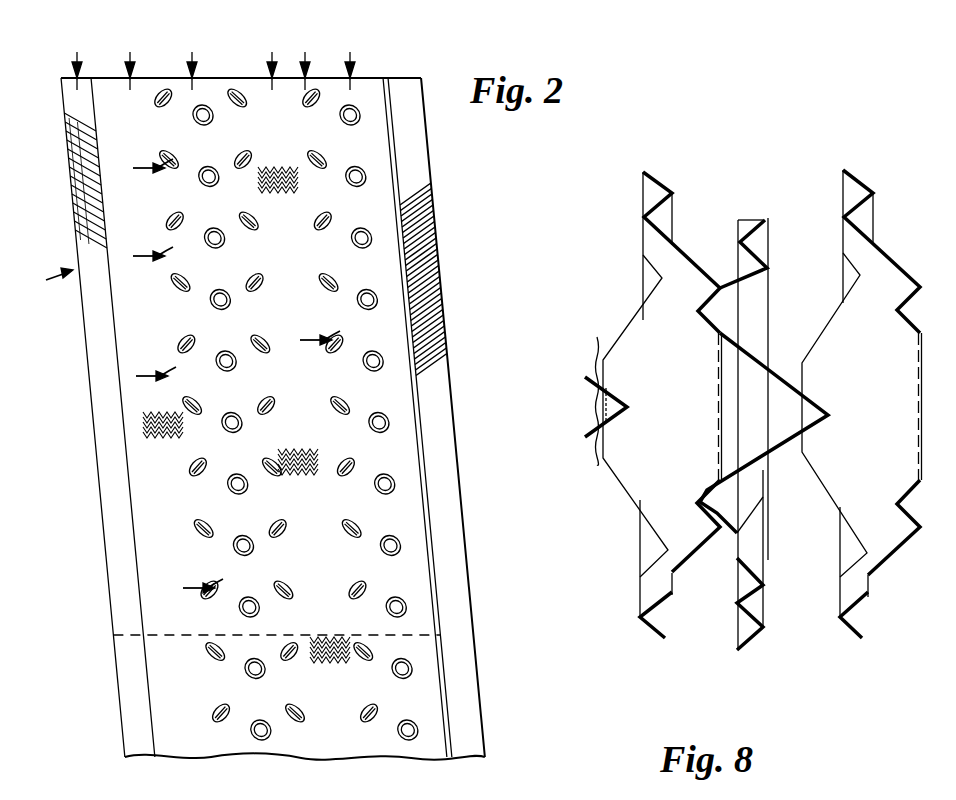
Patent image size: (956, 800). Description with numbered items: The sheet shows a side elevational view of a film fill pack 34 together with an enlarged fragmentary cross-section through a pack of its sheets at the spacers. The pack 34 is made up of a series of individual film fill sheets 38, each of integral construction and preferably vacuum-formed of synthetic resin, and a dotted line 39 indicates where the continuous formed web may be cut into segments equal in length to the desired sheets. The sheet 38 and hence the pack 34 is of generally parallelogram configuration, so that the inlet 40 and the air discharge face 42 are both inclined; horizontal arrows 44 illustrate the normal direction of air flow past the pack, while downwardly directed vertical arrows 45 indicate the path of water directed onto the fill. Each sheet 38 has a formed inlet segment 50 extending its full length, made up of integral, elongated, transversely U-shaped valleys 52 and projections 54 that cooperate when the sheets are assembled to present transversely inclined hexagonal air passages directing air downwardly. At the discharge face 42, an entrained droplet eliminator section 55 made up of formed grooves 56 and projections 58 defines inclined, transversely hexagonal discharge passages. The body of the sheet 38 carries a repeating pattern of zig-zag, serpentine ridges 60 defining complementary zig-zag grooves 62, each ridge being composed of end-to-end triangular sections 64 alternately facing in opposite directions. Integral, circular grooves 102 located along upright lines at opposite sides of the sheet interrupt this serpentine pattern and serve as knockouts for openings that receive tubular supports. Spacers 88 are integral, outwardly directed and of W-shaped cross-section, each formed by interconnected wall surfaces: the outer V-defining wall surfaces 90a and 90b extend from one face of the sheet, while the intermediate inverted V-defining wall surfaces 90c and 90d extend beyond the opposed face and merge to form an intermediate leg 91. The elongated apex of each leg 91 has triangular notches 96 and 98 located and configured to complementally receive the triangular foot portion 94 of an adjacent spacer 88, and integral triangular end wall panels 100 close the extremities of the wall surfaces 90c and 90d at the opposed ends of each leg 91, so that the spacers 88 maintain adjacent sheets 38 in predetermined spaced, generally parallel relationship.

In FIG. 2, the film fill pack 34 is at (392, 70).
In FIG. 2, the film fill sheet 38 is at (440, 171).
In FIG. 8, the film fill sheet 38 is at (658, 160).
In FIG. 2, the dotted line 39 is at (452, 630).
In FIG. 2, the inlet 40 is at (45, 279).
In FIG. 2, the air discharge face 42 is at (470, 357).
In FIG. 2, the arrows 44 is at (150, 377).
In FIG. 2, the arrows 45 is at (272, 52).
In FIG. 2, the inlet segment 50 is at (80, 52).
In FIG. 2, the valleys 52 is at (80, 205).
In FIG. 2, the projections 54 is at (78, 167).
In FIG. 2, the entrained droplet eliminator section 55 is at (427, 88).
In FIG. 2, the grooves 56 is at (438, 252).
In FIG. 2, the projections 58 is at (442, 302).
In FIG. 2, the triangular sections 64 is at (146, 448).
In FIG. 2, the spacers 88 is at (272, 140).
In FIG. 8, the spacers 88 is at (596, 534).
In FIG. 2, the circular grooves 102 is at (365, 175).
In FIG. 8, the ridges 60 is at (674, 196).
In FIG. 8, the grooves 62 is at (652, 217).
In FIG. 8, the wall surface 90a is at (736, 290).
In FIG. 8, the wall surface 90b is at (735, 357).
In FIG. 8, the wall surface 90c is at (603, 380).
In FIG. 8, the wall surface 90d is at (628, 448).
In FIG. 8, the intermediate leg 91 is at (782, 340).
In FIG. 8, the foot portion 94 is at (618, 325).
In FIG. 8, the notch 96 is at (697, 314).
In FIG. 8, the notch 98 is at (697, 502).
In FIG. 8, the end wall panels 100 is at (740, 235).